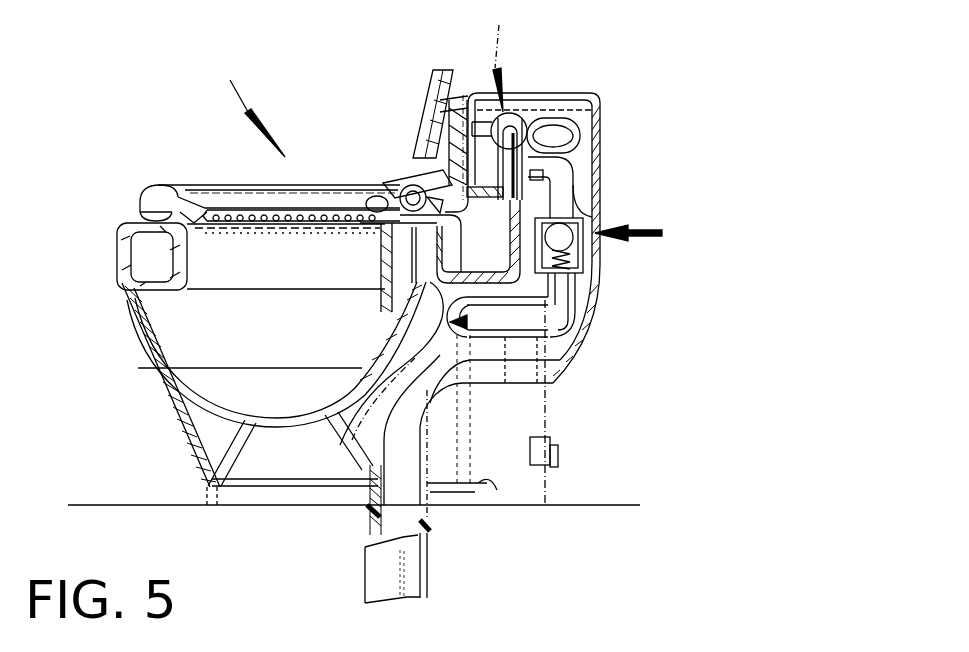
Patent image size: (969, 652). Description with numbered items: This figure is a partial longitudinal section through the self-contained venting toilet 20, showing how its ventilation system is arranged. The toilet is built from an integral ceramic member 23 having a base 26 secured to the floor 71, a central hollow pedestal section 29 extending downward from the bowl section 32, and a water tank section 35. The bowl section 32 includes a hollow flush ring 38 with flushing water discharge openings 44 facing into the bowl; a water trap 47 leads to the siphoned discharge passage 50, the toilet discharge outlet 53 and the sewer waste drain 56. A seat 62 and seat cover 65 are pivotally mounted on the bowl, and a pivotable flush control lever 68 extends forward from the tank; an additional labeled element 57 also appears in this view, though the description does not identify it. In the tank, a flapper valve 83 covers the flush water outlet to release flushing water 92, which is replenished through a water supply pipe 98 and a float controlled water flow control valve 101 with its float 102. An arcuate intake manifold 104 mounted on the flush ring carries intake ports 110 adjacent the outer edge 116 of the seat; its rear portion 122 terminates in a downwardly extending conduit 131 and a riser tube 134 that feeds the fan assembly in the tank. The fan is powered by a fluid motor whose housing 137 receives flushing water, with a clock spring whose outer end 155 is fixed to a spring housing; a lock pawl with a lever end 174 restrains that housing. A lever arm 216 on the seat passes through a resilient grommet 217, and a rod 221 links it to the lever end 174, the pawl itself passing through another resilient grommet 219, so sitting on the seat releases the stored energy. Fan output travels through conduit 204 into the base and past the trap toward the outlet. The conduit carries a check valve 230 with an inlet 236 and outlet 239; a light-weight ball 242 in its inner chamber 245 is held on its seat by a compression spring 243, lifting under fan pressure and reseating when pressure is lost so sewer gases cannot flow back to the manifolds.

The self-contained venting toilet 20 is at (242, 103).
The integral porcelain or ceramic member 23 is at (92, 362).
The base 26 is at (487, 494).
The central hollow pedestal section 29 is at (190, 434).
The bowl section 32 is at (132, 312).
The water tank section 35 is at (602, 173).
The hollow flush ring 38 is at (118, 258).
The flushing water discharge openings 44 is at (250, 236).
The water trap 47 is at (340, 376).
The siphoned discharge passage 50 is at (418, 462).
The toilet discharge outlet 53 is at (370, 520).
The sewer waste drain 56 is at (428, 580).
The inlet valve 57 is at (552, 92).
The seat 62 is at (187, 223).
The seat cover 65 is at (440, 107).
The pivotable flush control lever 68 is at (422, 177).
The floor 71 is at (107, 504).
The flapper valve 83 is at (545, 175).
The flushing water 92 is at (560, 127).
The water supply pipe 98 is at (552, 498).
The float controlled water flow control valve 101 is at (543, 120).
The float 102 is at (580, 132).
The arcuate intake manifold 104 is at (235, 186).
The intake ports 110 is at (277, 222).
The outer edge of seat 116 is at (140, 211).
The rear portion of intake manifold 122 is at (381, 228).
The downwardly extending conduit 131 is at (413, 262).
The riser tube 134 is at (478, 241).
The housing of fluid motor 137 is at (523, 110).
The outer end of clock spring 155 is at (506, 56).
The lever end of lock pawl 174 is at (440, 117).
The conduit 204 is at (570, 318).
The lever arm 216 is at (493, 177).
The resilient grommet 217 is at (398, 184).
The resilient grommet 219 is at (440, 143).
The rod 221 is at (470, 72).
The check valve 230 is at (658, 235).
The inlet 236 is at (585, 213).
The outlet 239 is at (555, 275).
The light-weight ball 242 is at (553, 244).
The compression spring 243 is at (585, 282).
The inner chamber 245 is at (575, 254).